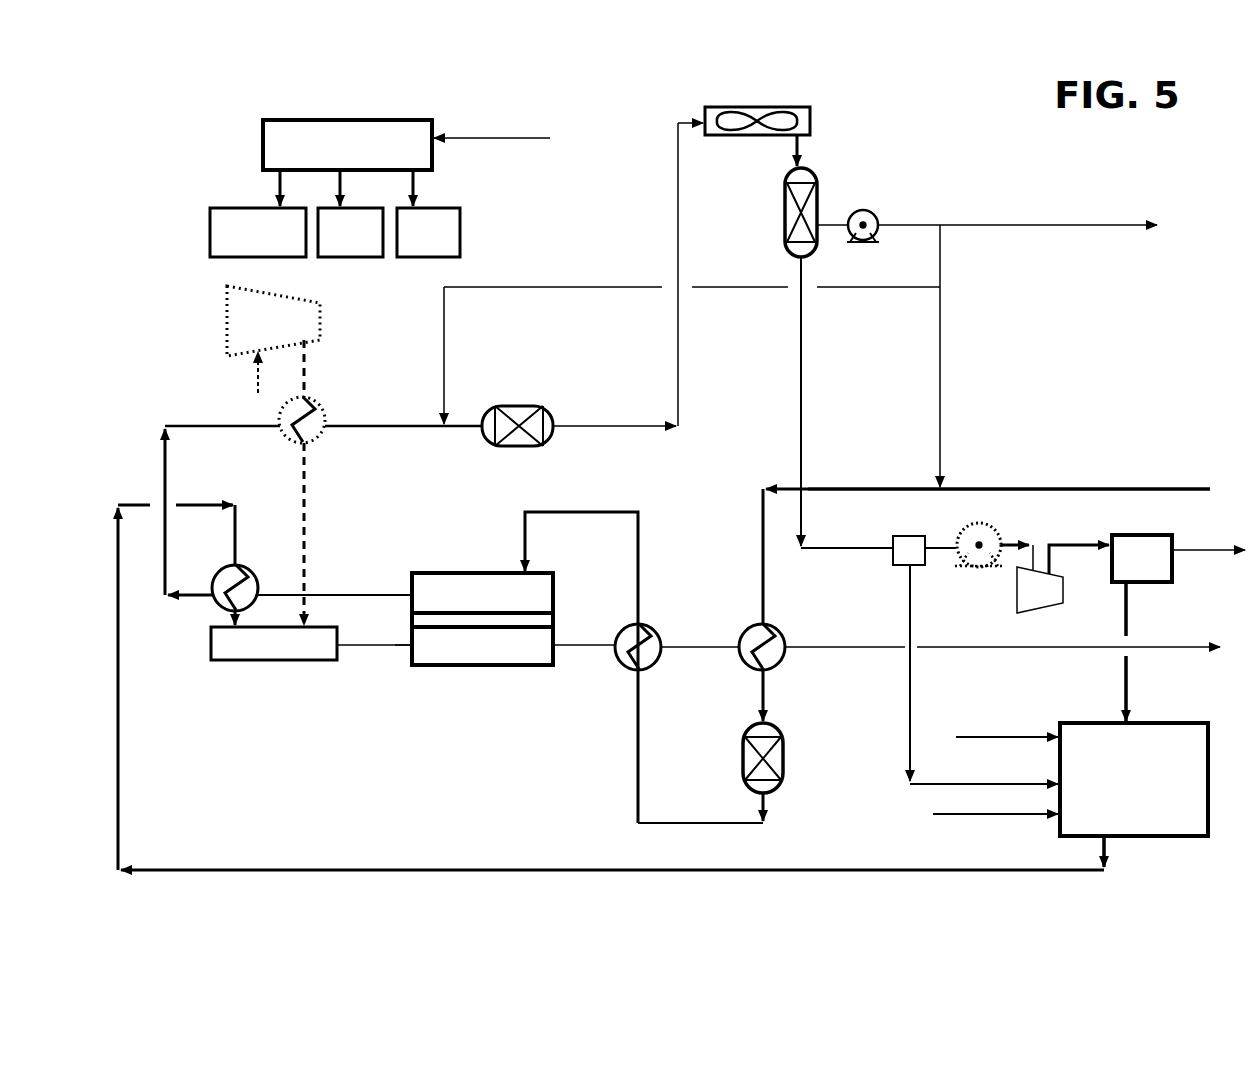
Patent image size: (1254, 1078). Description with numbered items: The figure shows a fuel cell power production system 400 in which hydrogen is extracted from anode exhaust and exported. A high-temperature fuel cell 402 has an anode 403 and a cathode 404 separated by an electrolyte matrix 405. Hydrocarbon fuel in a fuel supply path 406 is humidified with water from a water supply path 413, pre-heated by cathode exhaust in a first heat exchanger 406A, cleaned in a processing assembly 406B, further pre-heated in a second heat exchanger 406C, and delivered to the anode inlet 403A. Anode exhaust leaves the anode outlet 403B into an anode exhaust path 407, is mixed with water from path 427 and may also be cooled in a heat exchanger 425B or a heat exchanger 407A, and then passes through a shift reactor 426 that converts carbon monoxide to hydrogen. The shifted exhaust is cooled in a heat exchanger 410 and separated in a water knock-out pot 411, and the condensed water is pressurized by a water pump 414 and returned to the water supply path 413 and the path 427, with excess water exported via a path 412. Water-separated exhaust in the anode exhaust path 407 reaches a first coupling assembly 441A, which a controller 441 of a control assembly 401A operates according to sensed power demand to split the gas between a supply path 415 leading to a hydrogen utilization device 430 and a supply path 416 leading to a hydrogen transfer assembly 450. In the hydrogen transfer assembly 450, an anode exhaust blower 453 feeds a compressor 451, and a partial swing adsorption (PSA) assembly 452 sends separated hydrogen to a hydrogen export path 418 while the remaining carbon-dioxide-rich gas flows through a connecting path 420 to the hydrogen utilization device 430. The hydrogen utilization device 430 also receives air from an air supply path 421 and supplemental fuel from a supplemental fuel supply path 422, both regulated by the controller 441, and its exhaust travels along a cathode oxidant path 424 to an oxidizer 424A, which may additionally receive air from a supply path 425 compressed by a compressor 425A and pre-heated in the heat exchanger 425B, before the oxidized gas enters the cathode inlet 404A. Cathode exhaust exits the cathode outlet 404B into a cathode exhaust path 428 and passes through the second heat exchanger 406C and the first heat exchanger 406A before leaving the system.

The fuel cell power production system 400 is at (612, 88).
The control assembly 401A is at (325, 98).
The controller 441 is at (370, 120).
The first coupling assembly 441A is at (905, 545).
The heat exchanger 410 is at (770, 107).
The water knock-out pot 411 is at (790, 170).
The water pump 414 is at (872, 212).
The path 412 is at (992, 225).
The water supply path 413 is at (943, 295).
The path 427 is at (548, 287).
The anode exhaust path 407 is at (805, 362).
The compressor 425A is at (305, 318).
The supply path 425 is at (305, 378).
The heat exchanger 425B is at (320, 410).
The shift reactor 426 is at (525, 408).
The heat exchanger 407A is at (250, 572).
The oxidizer 424A is at (233, 662).
The high-temperature fuel cell 402 is at (404, 618).
The anode 403 is at (483, 576).
The inlet 403A is at (528, 570).
The anode outlet 403B is at (410, 590).
The electrolyte matrix 405 is at (542, 622).
The cathode 404 is at (467, 666).
The inlet 404A is at (410, 652).
The cathode outlet 404B is at (555, 666).
The second heat exchanger 406C is at (645, 625).
The cathode exhaust path 428 is at (699, 650).
The first heat exchanger 406A is at (773, 628).
The processing assembly 406B is at (752, 755).
The fuel supply path 406 is at (640, 588).
The supply path 416 is at (942, 548).
The anode exhaust blower 453 is at (993, 522).
The compressor 451 is at (1033, 586).
The partial swing adsorption (PSA) assembly 452 is at (1145, 535).
The hydrogen transfer assembly 450 is at (1083, 518).
The hydrogen export path 418 is at (1190, 556).
The connecting path 420 is at (1122, 703).
The supply path 415 is at (905, 715).
The air supply path 421 is at (1030, 736).
The supplemental fuel supply path 422 is at (953, 817).
The hydrogen utilization device 430 is at (1160, 730).
The cathode oxidant path 424 is at (1027, 870).